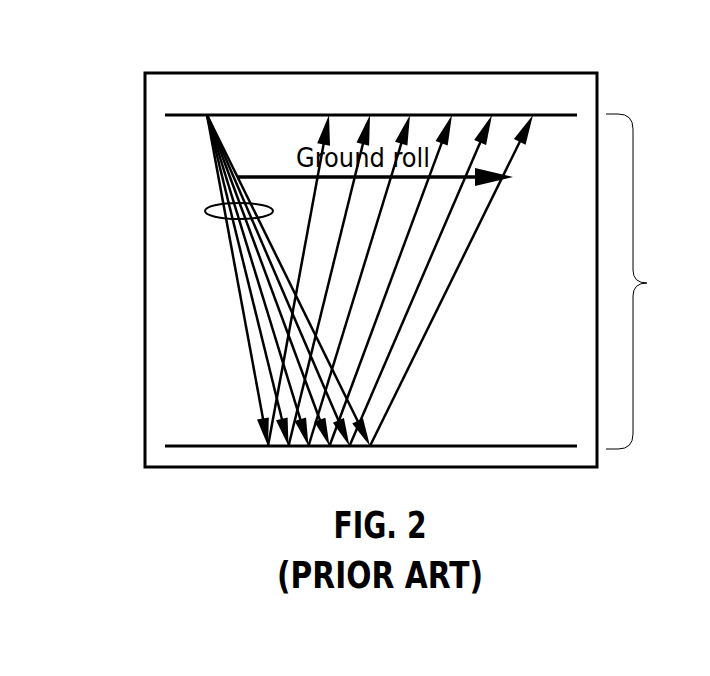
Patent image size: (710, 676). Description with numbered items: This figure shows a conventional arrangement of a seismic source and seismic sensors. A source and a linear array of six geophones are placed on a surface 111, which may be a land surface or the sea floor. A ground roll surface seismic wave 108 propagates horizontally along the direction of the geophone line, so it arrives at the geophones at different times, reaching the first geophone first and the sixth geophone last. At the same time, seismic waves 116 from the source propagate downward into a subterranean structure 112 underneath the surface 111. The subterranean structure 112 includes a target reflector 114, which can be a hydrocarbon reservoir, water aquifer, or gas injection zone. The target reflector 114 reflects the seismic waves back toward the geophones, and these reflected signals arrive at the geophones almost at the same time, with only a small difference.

The ground roll surface seismic wave 108 is at (425, 239).
The surface 111 is at (357, 70).
The subterranean structure 112 is at (649, 281).
The target reflector 114 is at (374, 463).
The seismic waves 116 is at (213, 280).